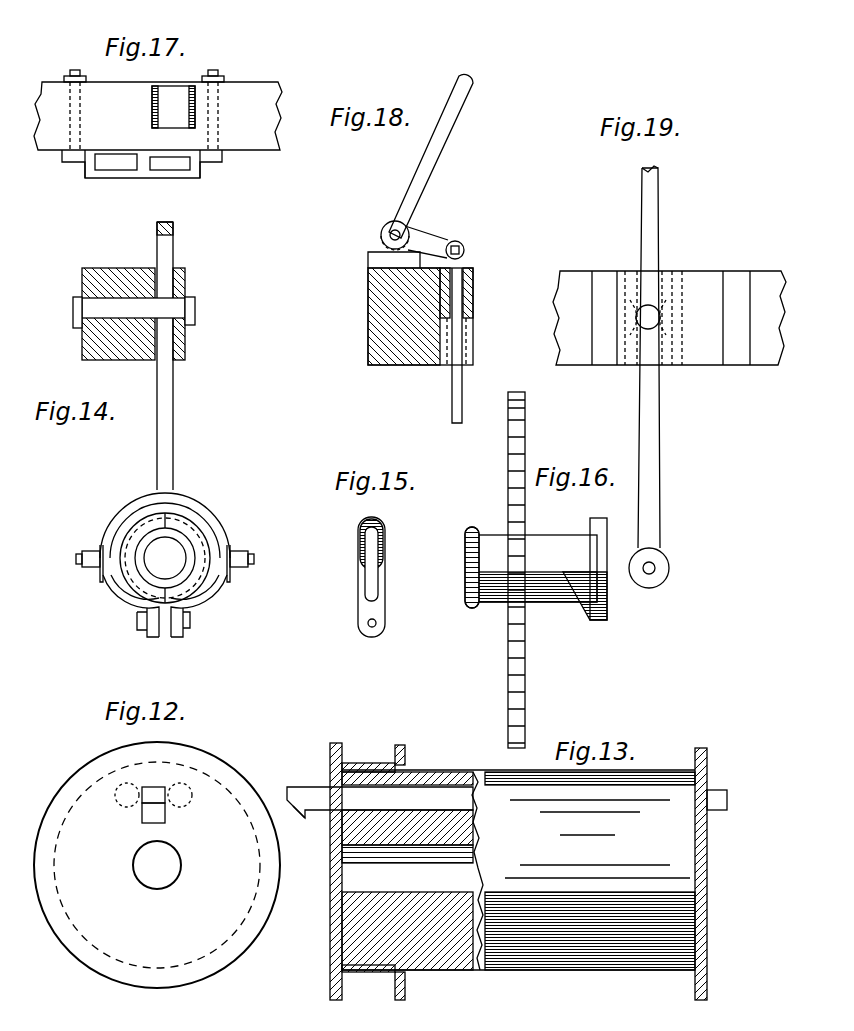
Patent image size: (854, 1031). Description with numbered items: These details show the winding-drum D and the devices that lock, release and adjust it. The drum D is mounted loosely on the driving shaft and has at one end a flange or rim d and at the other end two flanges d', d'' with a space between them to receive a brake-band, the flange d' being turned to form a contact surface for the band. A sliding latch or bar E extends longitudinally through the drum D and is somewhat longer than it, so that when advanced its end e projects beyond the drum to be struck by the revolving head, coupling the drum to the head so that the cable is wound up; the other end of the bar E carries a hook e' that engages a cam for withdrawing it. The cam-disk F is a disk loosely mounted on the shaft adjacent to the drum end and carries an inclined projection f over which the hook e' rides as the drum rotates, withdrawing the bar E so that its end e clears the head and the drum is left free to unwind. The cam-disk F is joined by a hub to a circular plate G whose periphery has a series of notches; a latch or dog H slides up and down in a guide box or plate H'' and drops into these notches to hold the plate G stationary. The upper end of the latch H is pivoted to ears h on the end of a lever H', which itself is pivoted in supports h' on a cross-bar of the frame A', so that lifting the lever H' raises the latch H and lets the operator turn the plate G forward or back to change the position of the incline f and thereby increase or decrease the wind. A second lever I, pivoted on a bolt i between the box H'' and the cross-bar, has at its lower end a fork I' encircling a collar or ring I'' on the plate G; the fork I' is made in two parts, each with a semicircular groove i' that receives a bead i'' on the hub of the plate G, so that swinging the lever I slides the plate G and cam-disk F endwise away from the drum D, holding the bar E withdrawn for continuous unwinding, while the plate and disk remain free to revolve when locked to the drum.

In FIG. 17, the frame bar A' is at (158, 116).
In FIG. 14, the frame bar A' is at (107, 314).
In FIG. 18, the frame bar A' is at (399, 316).
In FIG. 19, the frame bar A' is at (669, 308).
In FIG. 17, the supports h' is at (173, 107).
In FIG. 18, the supports h' is at (381, 244).
In FIG. 17, the guide box or plate H'' is at (142, 175).
In FIG. 18, the guide box or plate H'' is at (473, 316).
In FIG. 19, the guide box or plate H'' is at (670, 318).
In FIG. 14, the lever I is at (171, 356).
In FIG. 19, the lever I is at (650, 377).
In FIG. 14, the pivot or bolt i is at (196, 311).
In FIG. 19, the pivot or bolt i is at (648, 311).
In FIG. 14, the fork I' is at (165, 565).
In FIG. 15, the fork I' is at (382, 577).
In FIG. 14, the collar or ring I'' is at (165, 558).
In FIG. 16, the collar or ring I'' is at (537, 568).
In FIG. 18, the lever H' is at (438, 156).
In FIG. 18, the ears h is at (434, 236).
In FIG. 18, the latch H is at (468, 345).
In FIG. 15, the semicircular groove i' is at (385, 548).
In FIG. 16, the bead i'' is at (458, 567).
In FIG. 16, the circular plate G is at (527, 570).
In FIG. 16, the cam-disk F is at (595, 557).
In FIG. 16, the inclined projection f is at (575, 572).
In FIG. 12, the winding-drum D is at (190, 757).
In FIG. 13, the winding-drum D is at (540, 850).
In FIG. 13, the flange or rim d is at (704, 857).
In FIG. 13, the flange d' is at (381, 857).
In FIG. 12, the flange or rim d'' is at (157, 876).
In FIG. 13, the flange or rim d'' is at (340, 857).
In FIG. 12, the sliding latch or bar E is at (153, 787).
In FIG. 13, the sliding latch or bar E is at (323, 782).
In FIG. 13, the end of the bar e is at (726, 801).
In FIG. 12, the hook e' is at (153, 813).
In FIG. 13, the hook e' is at (303, 825).